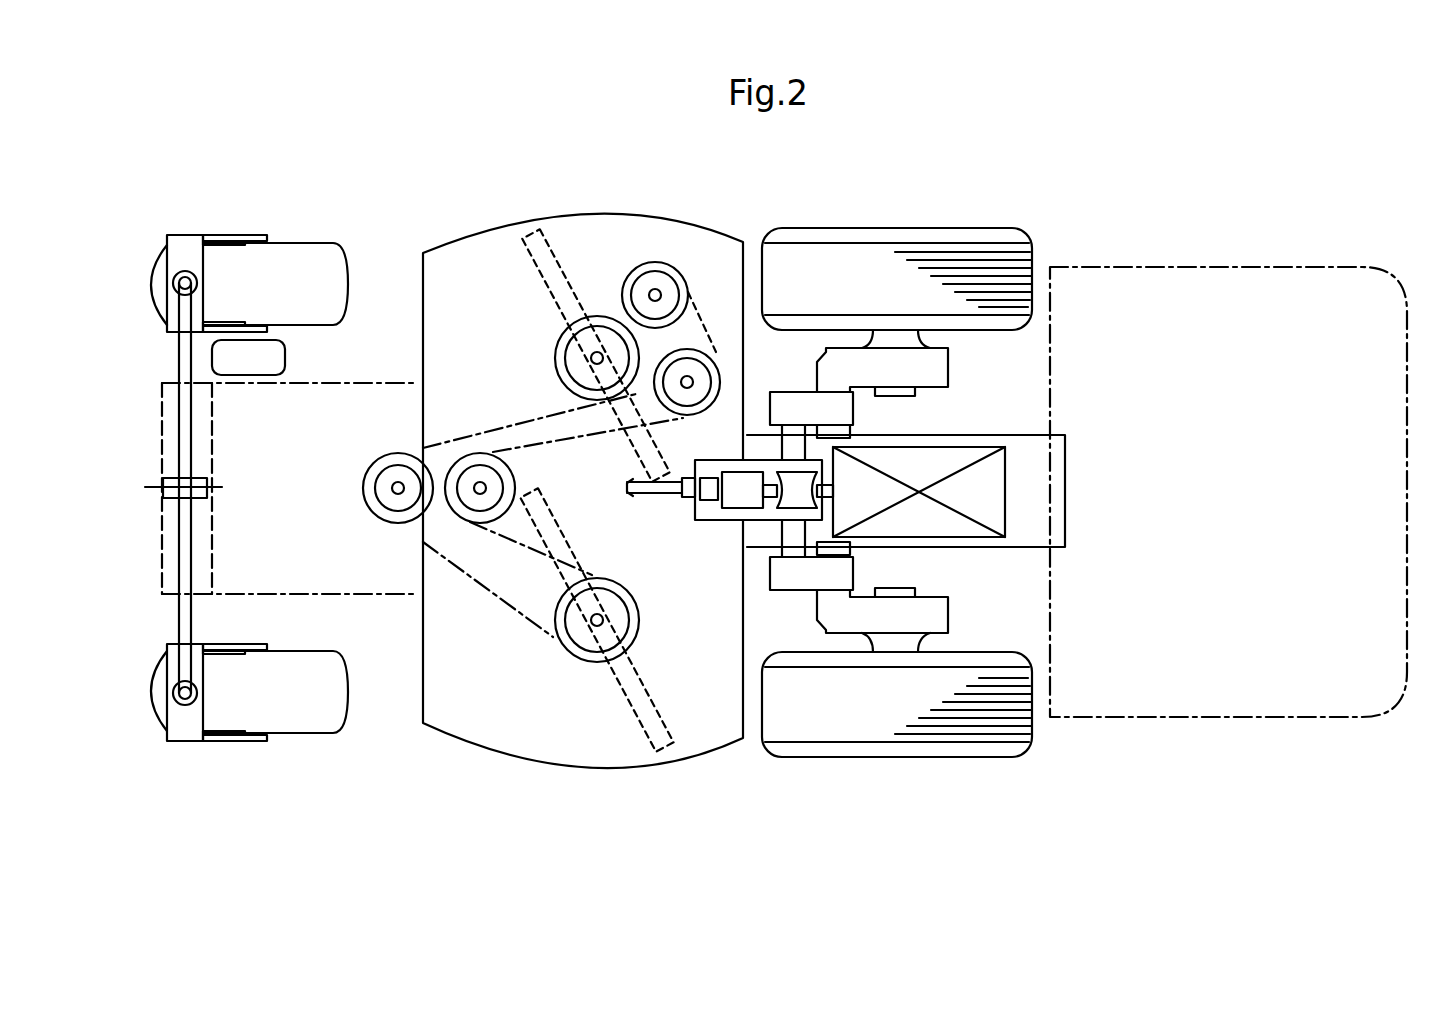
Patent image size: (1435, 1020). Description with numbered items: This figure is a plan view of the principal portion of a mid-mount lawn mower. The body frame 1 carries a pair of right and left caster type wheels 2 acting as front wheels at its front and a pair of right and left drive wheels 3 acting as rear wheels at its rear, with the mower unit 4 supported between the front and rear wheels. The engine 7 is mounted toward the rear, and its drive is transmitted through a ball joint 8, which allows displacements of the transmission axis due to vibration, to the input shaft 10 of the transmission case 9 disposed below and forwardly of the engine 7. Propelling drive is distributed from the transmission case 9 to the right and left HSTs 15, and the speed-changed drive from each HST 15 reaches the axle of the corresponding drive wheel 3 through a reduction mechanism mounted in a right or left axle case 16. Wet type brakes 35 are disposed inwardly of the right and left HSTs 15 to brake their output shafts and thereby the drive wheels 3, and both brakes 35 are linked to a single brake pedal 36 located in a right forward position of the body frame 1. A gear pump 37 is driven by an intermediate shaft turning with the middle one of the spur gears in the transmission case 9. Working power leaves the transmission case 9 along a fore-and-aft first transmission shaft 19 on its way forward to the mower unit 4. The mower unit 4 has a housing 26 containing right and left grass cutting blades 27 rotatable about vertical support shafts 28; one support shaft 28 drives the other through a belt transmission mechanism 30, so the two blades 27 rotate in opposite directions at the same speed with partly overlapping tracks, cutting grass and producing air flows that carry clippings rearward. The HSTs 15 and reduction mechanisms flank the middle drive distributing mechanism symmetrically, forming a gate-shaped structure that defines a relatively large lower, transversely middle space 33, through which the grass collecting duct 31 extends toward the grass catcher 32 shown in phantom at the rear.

The body frame 1 is at (341, 594).
The caster type wheels 2 is at (290, 255).
The drive wheels 3 is at (888, 237).
The mower unit 4 is at (583, 551).
The engine 7 is at (985, 493).
The ball joint 8 is at (800, 488).
The transmission case 9 is at (697, 508).
The input shaft 10 is at (768, 497).
The HSTs 15 is at (785, 396).
The axle case 16 is at (925, 366).
The first transmission shaft 19 is at (640, 482).
The housing 26 is at (590, 730).
The grass cutting blades 27 is at (517, 222).
The support shafts 28 is at (597, 352).
The belt transmission mechanism 30 is at (518, 423).
The grass collecting duct 31 is at (1030, 418).
The grass catcher 32 is at (1230, 285).
The space 33 is at (940, 571).
The wet type brakes 35 is at (838, 432).
The brake pedal 36 is at (292, 358).
The gear pump 37 is at (705, 478).